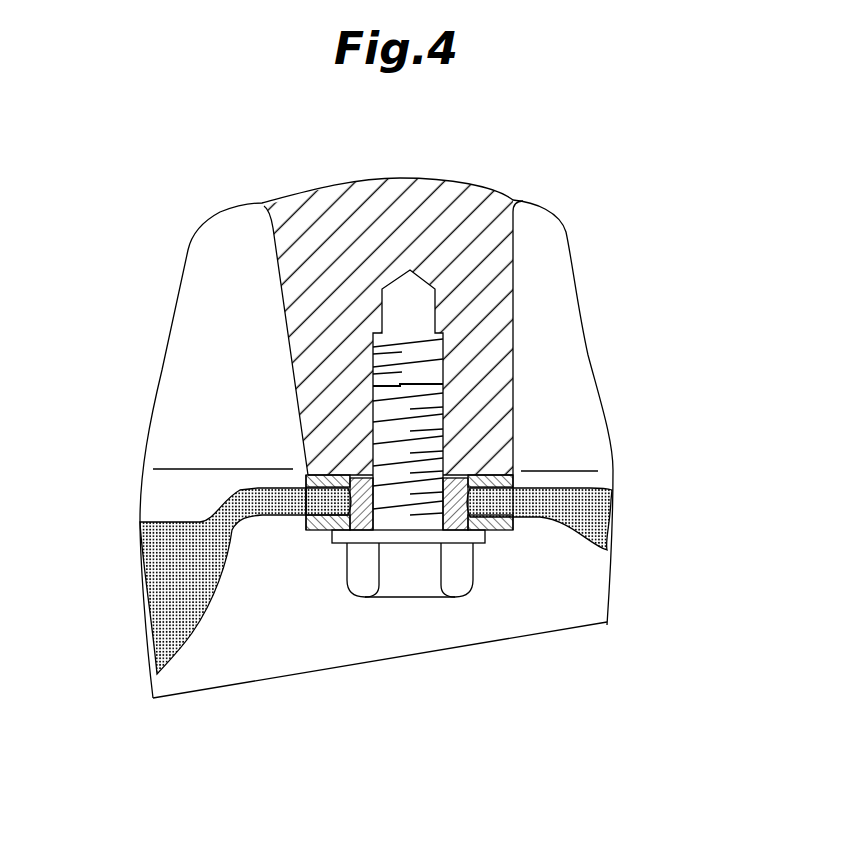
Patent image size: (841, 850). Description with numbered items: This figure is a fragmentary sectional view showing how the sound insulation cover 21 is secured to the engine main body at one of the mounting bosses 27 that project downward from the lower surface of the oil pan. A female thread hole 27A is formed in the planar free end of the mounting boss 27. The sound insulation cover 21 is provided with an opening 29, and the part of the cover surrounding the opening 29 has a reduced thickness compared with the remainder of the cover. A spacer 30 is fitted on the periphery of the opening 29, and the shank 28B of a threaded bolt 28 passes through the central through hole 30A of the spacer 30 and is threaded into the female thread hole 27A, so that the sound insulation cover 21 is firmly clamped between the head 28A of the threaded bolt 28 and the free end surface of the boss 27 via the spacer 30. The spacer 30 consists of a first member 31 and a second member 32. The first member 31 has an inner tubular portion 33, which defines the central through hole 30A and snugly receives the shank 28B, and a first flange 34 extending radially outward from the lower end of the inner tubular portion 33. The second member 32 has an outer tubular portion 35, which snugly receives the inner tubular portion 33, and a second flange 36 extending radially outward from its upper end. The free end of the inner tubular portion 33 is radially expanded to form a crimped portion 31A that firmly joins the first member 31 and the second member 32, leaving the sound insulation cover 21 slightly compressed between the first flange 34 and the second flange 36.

The sound insulation cover 21 is at (153, 577).
The mounting boss 27 is at (497, 323).
The female thread hole 27A is at (375, 352).
The threaded bolt 28 is at (407, 606).
The head 28A is at (363, 592).
The shank 28B is at (448, 420).
The opening 29 is at (363, 574).
The spacer 30 is at (293, 478).
The central through hole 30A is at (430, 498).
The first member 31 is at (305, 528).
The crimped portion 31A is at (365, 476).
The second member 32 is at (306, 474).
The inner tubular portion 33 is at (456, 474).
The first flange 34 is at (495, 527).
The outer tubular portion 35 is at (545, 492).
The second flange 36 is at (514, 452).